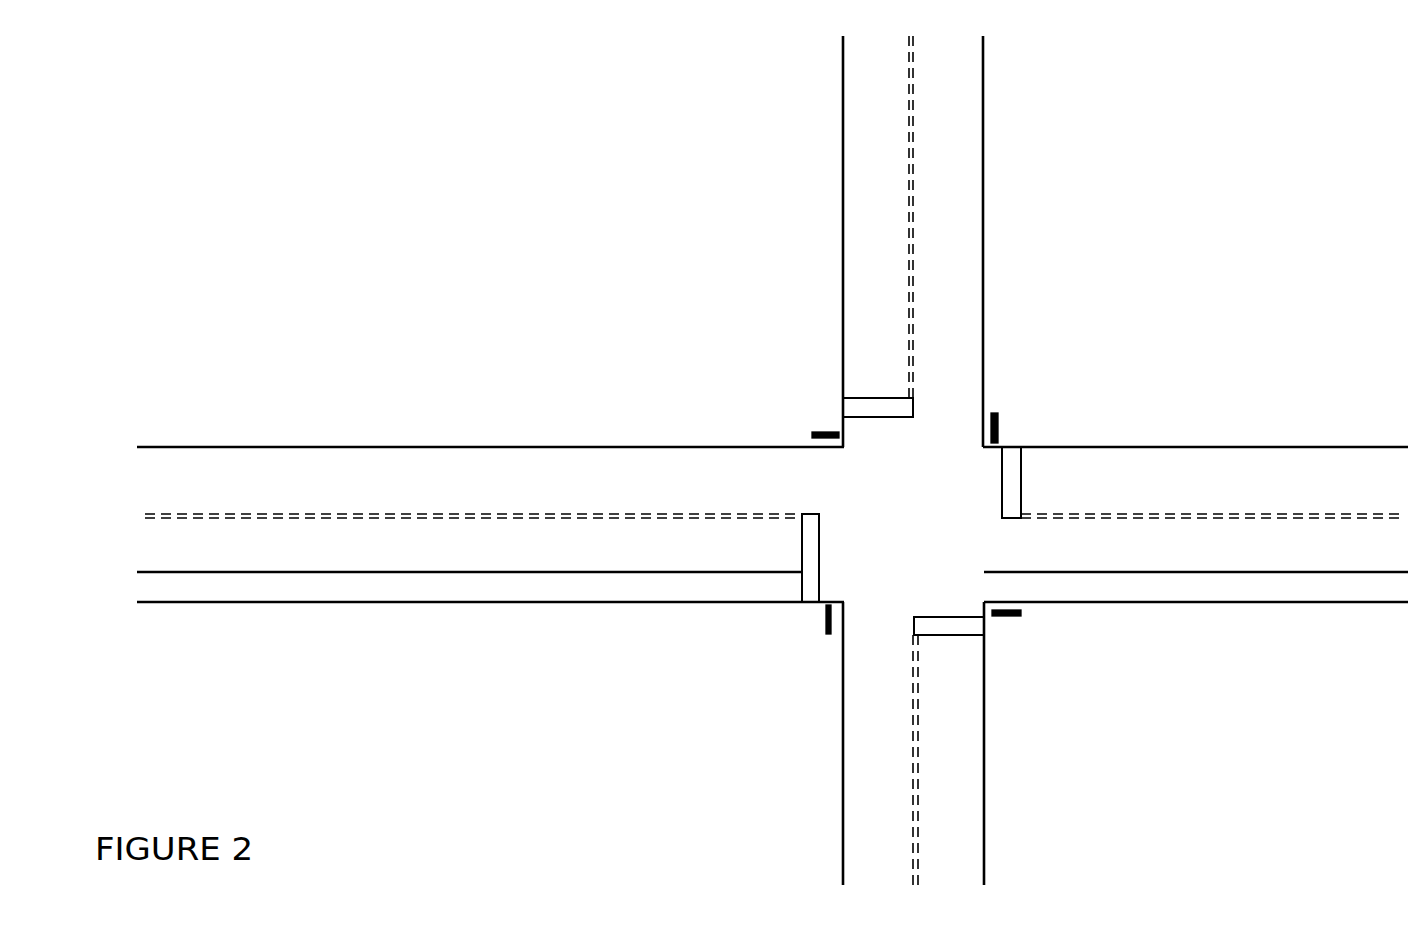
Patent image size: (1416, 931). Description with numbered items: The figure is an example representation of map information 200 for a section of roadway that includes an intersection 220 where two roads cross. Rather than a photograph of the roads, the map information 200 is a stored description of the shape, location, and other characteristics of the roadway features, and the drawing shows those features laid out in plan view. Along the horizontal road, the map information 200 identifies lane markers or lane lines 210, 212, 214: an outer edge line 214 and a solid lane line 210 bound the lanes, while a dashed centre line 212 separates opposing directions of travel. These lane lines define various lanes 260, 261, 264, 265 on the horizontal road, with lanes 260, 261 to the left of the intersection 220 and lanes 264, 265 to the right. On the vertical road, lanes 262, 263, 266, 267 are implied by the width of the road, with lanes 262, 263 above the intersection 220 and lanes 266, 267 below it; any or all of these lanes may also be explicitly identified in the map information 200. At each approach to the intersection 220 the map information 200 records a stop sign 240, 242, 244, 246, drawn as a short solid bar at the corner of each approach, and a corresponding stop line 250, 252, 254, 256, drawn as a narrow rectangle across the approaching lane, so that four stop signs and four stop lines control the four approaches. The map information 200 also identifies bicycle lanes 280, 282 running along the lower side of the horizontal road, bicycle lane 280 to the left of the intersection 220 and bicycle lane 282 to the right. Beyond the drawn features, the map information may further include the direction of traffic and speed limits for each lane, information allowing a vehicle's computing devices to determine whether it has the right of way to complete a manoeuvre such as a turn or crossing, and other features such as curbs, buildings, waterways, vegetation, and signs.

The map information 200 is at (193, 806).
The lane line 210 is at (163, 573).
The lane line 212 is at (270, 517).
The lane line 214 is at (372, 448).
The intersection 220 is at (914, 514).
The stop sign 240 is at (828, 636).
The stop sign 242 is at (826, 432).
The stop sign 244 is at (997, 413).
The stop sign 246 is at (1012, 617).
The stop line 250 is at (957, 636).
The stop line 252 is at (802, 553).
The stop line 254 is at (862, 398).
The stop line 256 is at (1021, 478).
The lane 260 is at (456, 545).
The lane 261 is at (527, 490).
The lane 262 is at (878, 383).
The lane 263 is at (943, 217).
The lane 264 is at (1195, 473).
The lane 265 is at (1196, 543).
The lane 266 is at (949, 669).
The lane 267 is at (889, 760).
The bicycle lane 280 is at (507, 583).
The bicycle lane 282 is at (1300, 591).